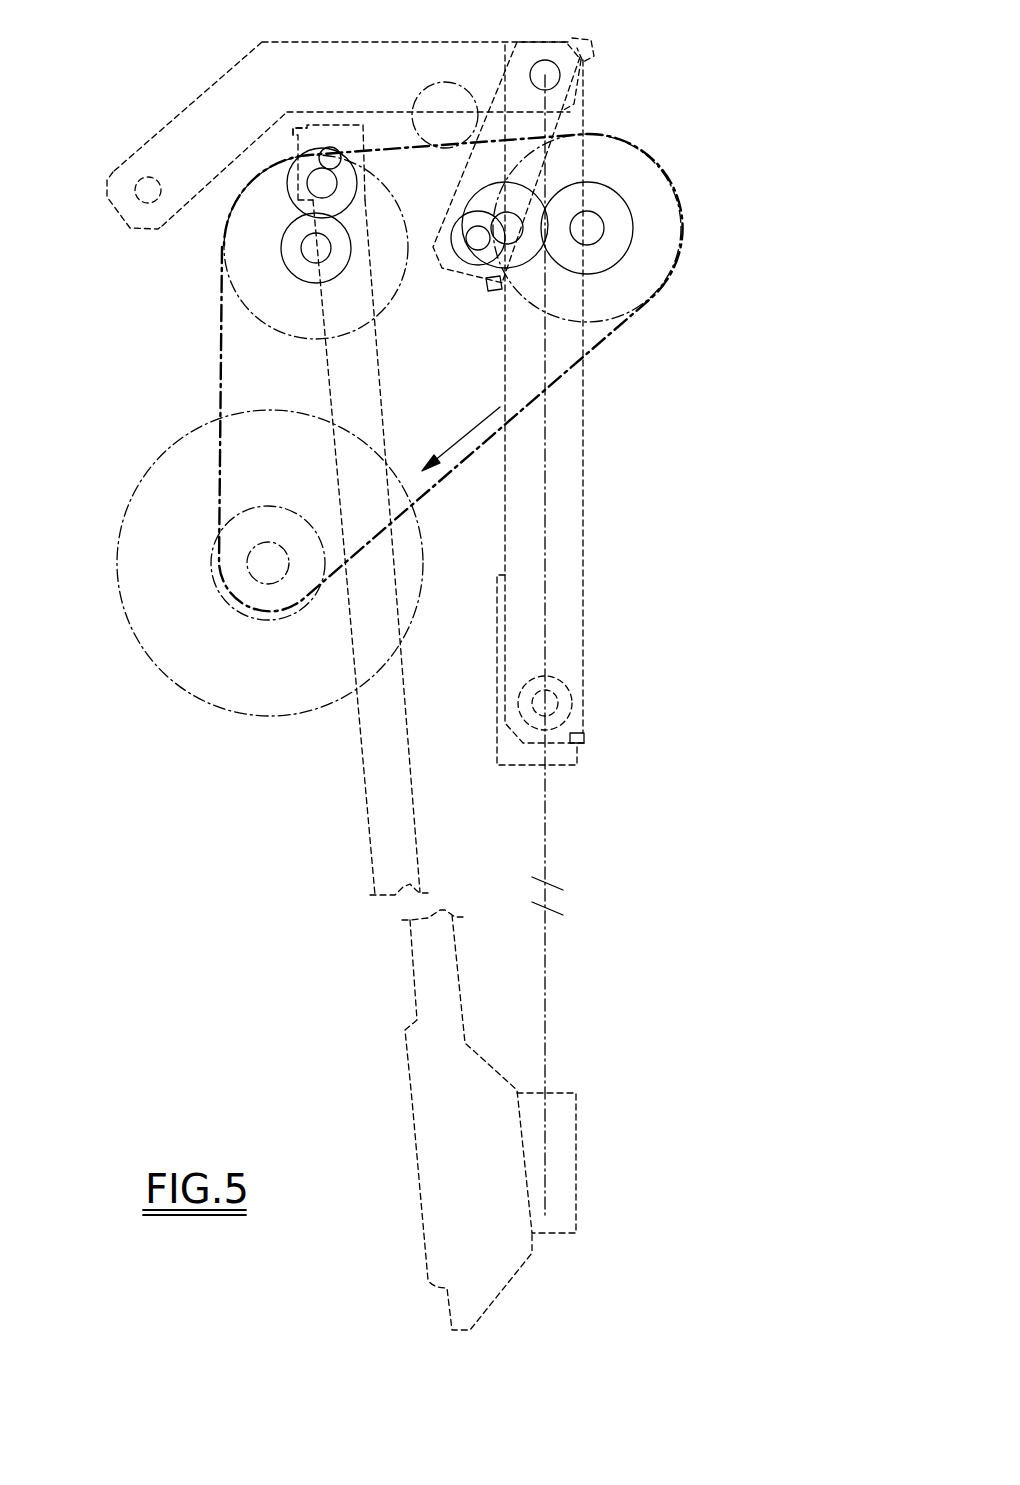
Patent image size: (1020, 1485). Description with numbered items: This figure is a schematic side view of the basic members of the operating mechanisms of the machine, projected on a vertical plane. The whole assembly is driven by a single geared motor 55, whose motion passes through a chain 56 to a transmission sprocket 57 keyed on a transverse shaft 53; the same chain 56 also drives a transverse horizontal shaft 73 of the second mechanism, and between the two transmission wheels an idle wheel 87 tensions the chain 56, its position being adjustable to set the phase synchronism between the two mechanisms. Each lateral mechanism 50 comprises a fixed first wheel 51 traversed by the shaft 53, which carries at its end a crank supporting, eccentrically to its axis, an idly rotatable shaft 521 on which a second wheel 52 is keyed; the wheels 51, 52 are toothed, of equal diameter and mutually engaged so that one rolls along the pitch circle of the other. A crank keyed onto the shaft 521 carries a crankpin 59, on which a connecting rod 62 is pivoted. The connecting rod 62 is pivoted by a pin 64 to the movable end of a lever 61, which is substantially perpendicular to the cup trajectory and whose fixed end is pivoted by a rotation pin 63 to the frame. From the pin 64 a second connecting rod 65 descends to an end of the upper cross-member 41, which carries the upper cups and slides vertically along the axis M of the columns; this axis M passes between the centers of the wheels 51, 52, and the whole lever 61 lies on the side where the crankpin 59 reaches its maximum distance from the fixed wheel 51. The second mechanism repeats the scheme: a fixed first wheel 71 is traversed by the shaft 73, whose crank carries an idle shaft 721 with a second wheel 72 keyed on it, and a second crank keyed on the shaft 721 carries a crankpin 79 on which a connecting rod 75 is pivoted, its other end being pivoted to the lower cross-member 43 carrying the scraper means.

The lateral mechanism 50 is at (297, 116).
The lever 61 is at (297, 116).
The rotation pin 63 is at (140, 176).
The idle wheel 87 is at (445, 82).
The pin 64 is at (555, 63).
The connecting rod 62 is at (558, 118).
The second connecting rod 65 is at (586, 478).
The upper cross-member 41 is at (575, 765).
The vertical axis M is at (556, 850).
The lower cross-member 43 is at (575, 1093).
The connecting rod 75 is at (370, 815).
The second wheel 72 is at (254, 111).
The crankpin 79 is at (333, 148).
The shaft 721 is at (287, 157).
The fixed first wheel 71 is at (282, 247).
The transverse horizontal shaft 73 is at (300, 265).
The transmission sprocket 57 is at (680, 203).
The fixed first wheel 51 is at (610, 185).
The transverse shaft 53 is at (598, 243).
The crankpin 59 is at (470, 248).
The second wheel 52 is at (484, 275).
The shaft 521 is at (512, 248).
The geared motor 55 is at (135, 493).
The chain 56 is at (222, 377).